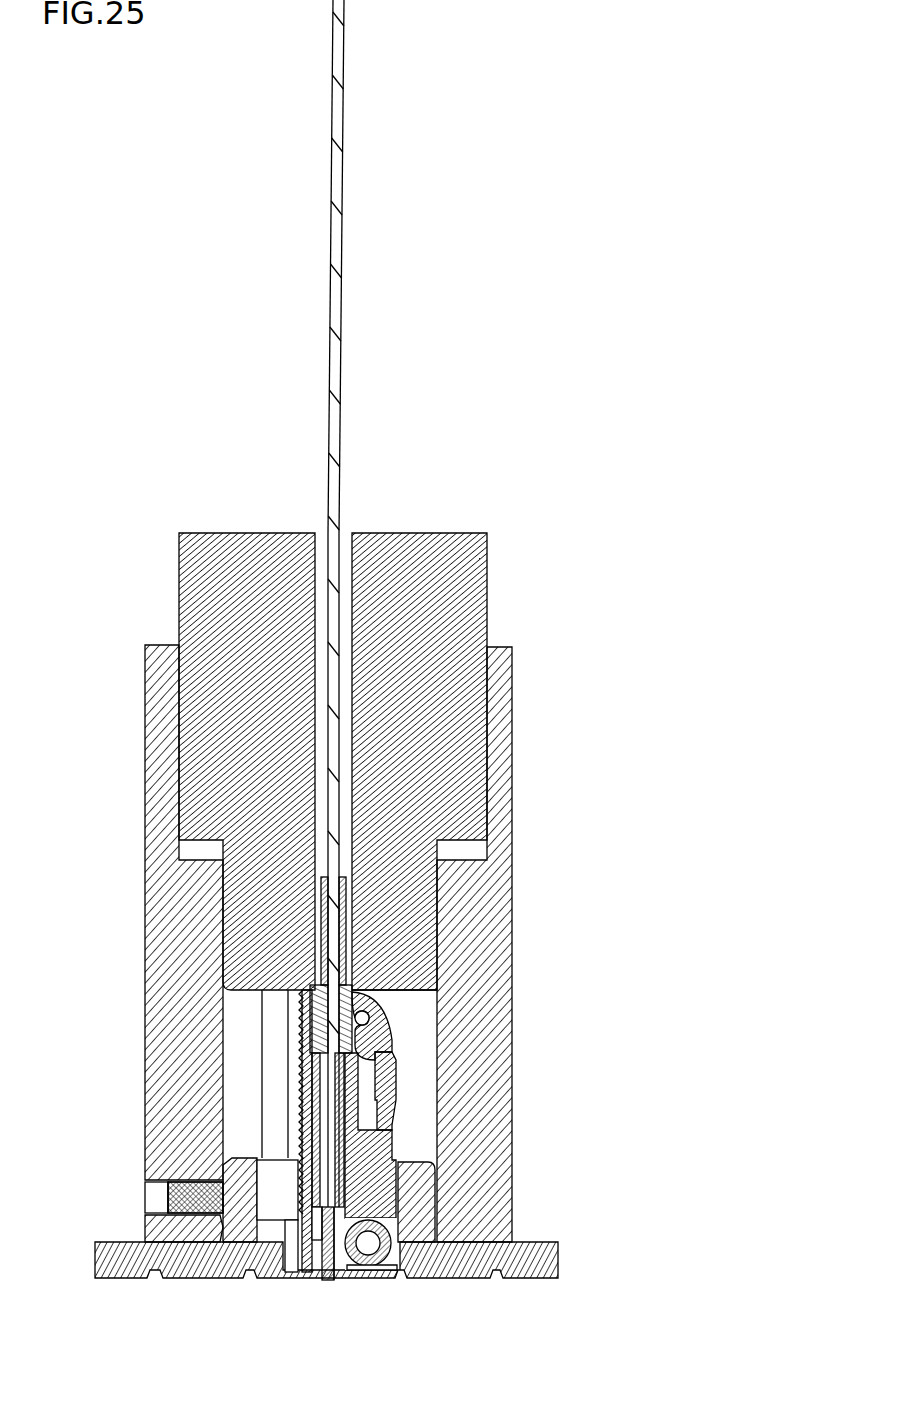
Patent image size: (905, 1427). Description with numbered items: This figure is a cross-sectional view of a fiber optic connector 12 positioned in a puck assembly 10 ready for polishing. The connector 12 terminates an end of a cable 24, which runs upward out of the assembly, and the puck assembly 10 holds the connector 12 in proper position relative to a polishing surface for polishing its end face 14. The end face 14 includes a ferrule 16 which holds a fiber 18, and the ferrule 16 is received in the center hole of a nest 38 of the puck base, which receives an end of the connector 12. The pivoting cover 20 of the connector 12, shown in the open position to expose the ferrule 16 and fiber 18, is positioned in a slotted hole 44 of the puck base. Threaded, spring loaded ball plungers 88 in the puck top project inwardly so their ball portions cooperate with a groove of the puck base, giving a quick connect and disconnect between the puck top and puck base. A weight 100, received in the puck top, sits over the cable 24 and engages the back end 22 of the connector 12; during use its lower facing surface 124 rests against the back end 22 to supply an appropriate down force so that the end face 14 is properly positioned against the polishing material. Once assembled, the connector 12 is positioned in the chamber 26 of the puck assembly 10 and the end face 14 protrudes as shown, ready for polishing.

The puck assembly 10 is at (524, 686).
The weight 100 is at (415, 532).
The cable 24 is at (340, 420).
The back end 22 is at (358, 991).
The lower facing surface 124 is at (403, 992).
The chamber 26 is at (412, 1042).
The fiber optic connector 12 is at (389, 1060).
The ball plunger 88 is at (168, 1197).
The nest 38 is at (292, 1233).
The pivoting cover 20 is at (390, 1247).
The slotted hole 44 is at (392, 1272).
The fiber 18 is at (322, 1263).
The end face 14 is at (323, 1281).
The ferrule 16 is at (333, 1282).